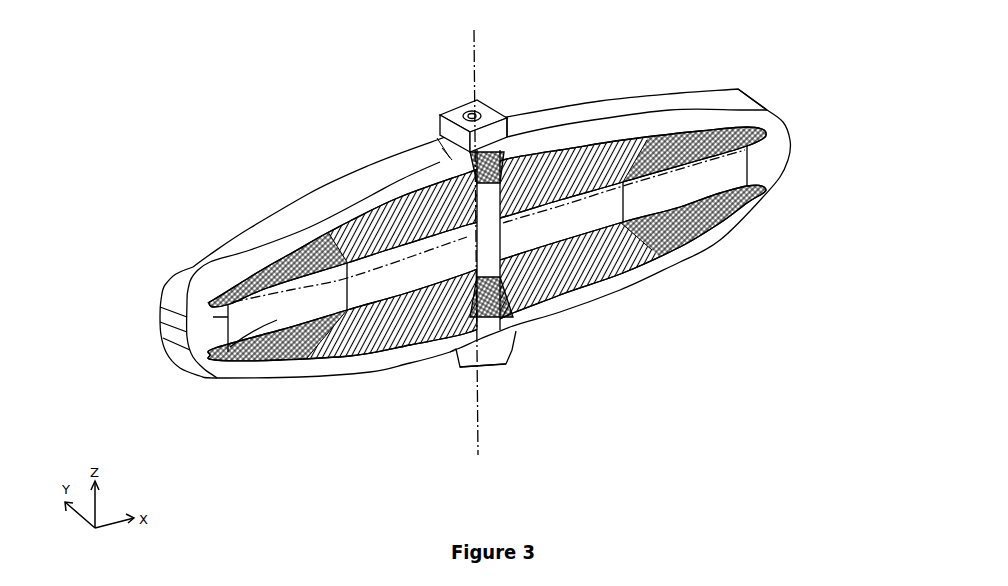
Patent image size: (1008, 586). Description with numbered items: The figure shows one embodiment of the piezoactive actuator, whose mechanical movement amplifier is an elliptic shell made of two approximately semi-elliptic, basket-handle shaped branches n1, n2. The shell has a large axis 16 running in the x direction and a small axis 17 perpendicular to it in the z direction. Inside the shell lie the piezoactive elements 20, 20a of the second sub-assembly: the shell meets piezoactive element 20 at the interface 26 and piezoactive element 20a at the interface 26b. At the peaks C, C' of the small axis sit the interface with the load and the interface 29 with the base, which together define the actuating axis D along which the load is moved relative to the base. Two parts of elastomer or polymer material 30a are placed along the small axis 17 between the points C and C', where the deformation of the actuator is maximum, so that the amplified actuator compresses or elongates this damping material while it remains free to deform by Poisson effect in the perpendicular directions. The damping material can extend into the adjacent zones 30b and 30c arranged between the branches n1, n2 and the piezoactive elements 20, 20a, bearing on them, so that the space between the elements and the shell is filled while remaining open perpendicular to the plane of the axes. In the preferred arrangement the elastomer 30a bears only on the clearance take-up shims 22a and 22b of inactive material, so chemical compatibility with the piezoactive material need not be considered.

The large axis 16 is at (222, 290).
The small axis 17 is at (447, 165).
The piezoactive element 20 is at (225, 380).
The piezoactive element 20a is at (790, 142).
The clearance take-up shim 22a is at (462, 175).
The clearance take-up shim 22b is at (545, 300).
The interface 26 is at (165, 322).
The interface 26b is at (788, 170).
The interface with the base 29 is at (518, 350).
The elastomer material part 30a is at (510, 116).
The elastomer material zone 30b is at (385, 210).
The elastomer material zone 30c is at (292, 252).
The peak of the small axis C is at (442, 84).
The peak of the small axis C' is at (441, 391).
The actuating axis D is at (458, 230).
The branch of the shell n1 is at (310, 200).
The branch of the shell n2 is at (565, 106).